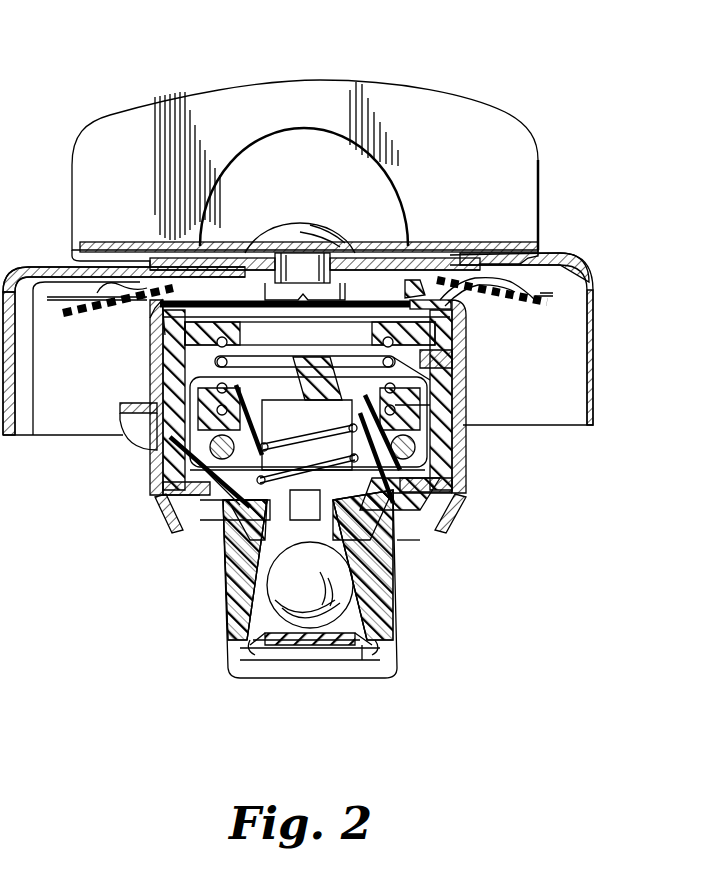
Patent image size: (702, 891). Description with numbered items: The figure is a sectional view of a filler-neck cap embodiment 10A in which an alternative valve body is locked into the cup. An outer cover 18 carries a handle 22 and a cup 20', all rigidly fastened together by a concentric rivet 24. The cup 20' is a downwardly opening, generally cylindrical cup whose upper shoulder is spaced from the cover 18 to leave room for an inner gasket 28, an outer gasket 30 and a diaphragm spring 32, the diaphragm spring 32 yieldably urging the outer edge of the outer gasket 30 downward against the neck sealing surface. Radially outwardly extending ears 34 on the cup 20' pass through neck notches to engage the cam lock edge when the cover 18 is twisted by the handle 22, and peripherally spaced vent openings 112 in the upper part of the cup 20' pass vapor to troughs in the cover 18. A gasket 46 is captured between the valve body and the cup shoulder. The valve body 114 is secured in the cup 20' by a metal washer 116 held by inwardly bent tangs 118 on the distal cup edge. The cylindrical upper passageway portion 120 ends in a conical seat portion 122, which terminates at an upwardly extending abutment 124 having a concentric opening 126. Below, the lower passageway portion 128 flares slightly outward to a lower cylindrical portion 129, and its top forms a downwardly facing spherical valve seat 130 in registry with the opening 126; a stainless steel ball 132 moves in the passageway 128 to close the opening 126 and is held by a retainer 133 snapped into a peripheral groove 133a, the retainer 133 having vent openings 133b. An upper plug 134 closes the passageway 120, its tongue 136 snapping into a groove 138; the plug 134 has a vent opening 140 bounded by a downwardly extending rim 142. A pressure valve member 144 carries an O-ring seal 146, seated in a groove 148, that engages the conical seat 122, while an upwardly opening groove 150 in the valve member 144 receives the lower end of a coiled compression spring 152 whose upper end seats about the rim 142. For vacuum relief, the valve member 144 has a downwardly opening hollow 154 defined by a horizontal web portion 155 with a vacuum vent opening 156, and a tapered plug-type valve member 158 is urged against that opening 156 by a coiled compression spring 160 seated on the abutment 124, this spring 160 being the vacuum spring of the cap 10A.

The cap 10A is at (518, 72).
The handle 22 is at (527, 150).
The concentric rivet 24 is at (296, 232).
The vent openings 112 is at (236, 288).
The upper plug 134 is at (246, 298).
The vent opening 140 is at (357, 318).
The inner gasket 28 is at (428, 278).
The outer cover 18 is at (594, 325).
The diaphragm spring 32 is at (515, 283).
The outer gasket 30 is at (540, 300).
The ears 34 is at (138, 423).
The gasket 46 is at (145, 318).
The tongue 136 is at (157, 335).
The cup 20' is at (328, 397).
The rim 142 is at (250, 343).
The upper passageway portion 120 is at (193, 366).
The upwardly opening groove 150 is at (213, 398).
The vacuum vent opening 156 is at (334, 378).
The web portion 155 is at (350, 385).
The tapered plug-type valve member 158 is at (314, 412).
The groove 138 is at (464, 361).
The coiled compression spring 152 is at (468, 378).
The hollow 154 is at (462, 410).
The O-ring seal 146 is at (464, 440).
The pressure valve member 144 is at (471, 418).
The valve body 114 is at (450, 458).
The groove 148 is at (163, 470).
The conical seat portion 122 is at (160, 493).
The tangs 118 is at (163, 518).
The coiled compression spring 160 is at (228, 500).
The abutment 124 is at (237, 507).
The opening 126 is at (300, 493).
The lower passageway portion 128 is at (230, 600).
The spherical valve seat 130 is at (363, 552).
The stainless steel ball 132 is at (333, 588).
The metal washer 116 is at (420, 517).
The lower cylindrical portion 129 is at (240, 643).
The retainer 133 is at (297, 647).
The peripherally extending groove 133a is at (383, 645).
The vent openings 133b is at (367, 660).